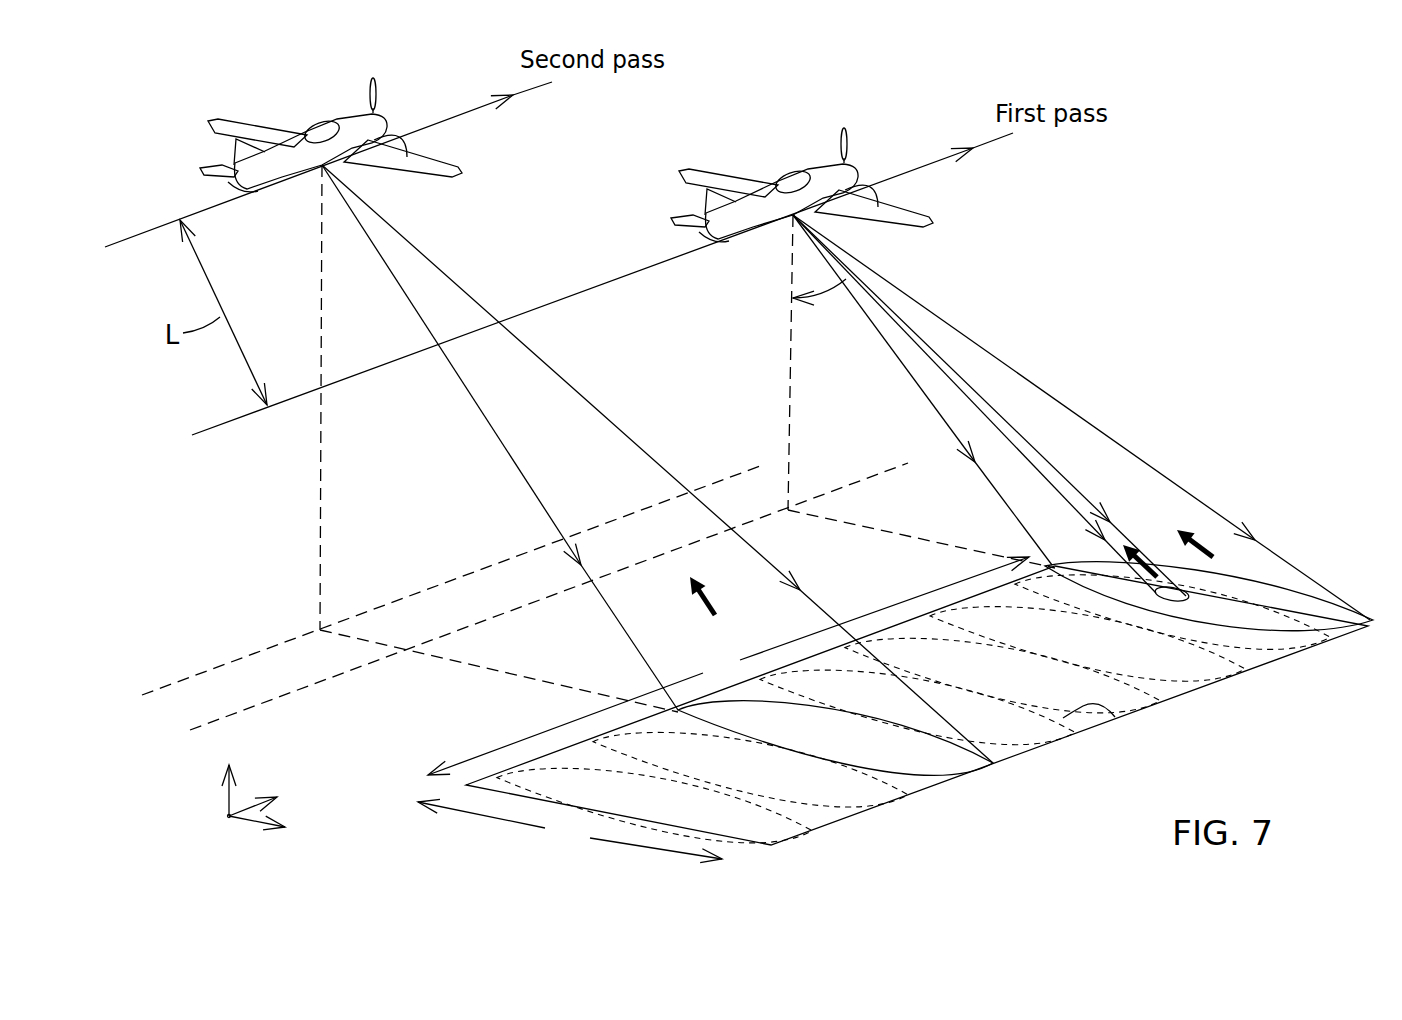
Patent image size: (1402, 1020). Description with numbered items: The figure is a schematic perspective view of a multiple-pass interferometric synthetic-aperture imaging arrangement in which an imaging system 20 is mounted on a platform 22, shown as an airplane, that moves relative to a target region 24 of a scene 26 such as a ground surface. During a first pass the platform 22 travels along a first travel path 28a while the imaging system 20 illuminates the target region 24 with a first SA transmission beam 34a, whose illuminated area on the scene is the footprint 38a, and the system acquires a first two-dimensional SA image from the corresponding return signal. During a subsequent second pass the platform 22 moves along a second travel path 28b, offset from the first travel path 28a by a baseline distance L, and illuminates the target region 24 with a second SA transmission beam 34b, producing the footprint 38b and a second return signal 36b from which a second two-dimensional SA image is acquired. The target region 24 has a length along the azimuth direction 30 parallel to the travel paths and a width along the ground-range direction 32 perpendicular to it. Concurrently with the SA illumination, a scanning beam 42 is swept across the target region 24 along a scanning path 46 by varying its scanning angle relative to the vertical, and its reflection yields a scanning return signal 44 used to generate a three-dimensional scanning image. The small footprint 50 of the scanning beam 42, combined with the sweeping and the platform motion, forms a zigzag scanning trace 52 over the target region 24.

The imaging system 20 is at (302, 88).
The platform 22 is at (433, 160).
The target region 24 is at (866, 793).
The scene 26 is at (468, 850).
The first travel path 28a is at (653, 268).
The second travel path 28b is at (135, 232).
The azimuth direction 30 is at (250, 802).
The ground-range direction 32 is at (255, 822).
The first SA transmission beam 34a is at (1052, 395).
The second SA transmission beam 34b is at (652, 457).
The second return signal 36b is at (703, 597).
The footprint of the first SA transmission beam 38a is at (1340, 617).
The footprint of the second SA transmission beam 38b is at (966, 760).
The scanning beam 42 is at (1096, 510).
The scanning return signal 44 is at (1136, 553).
The scanning path 46 is at (800, 282).
The footprint of the scanning beam 50 is at (1180, 601).
The scanning trace 52 is at (1115, 717).